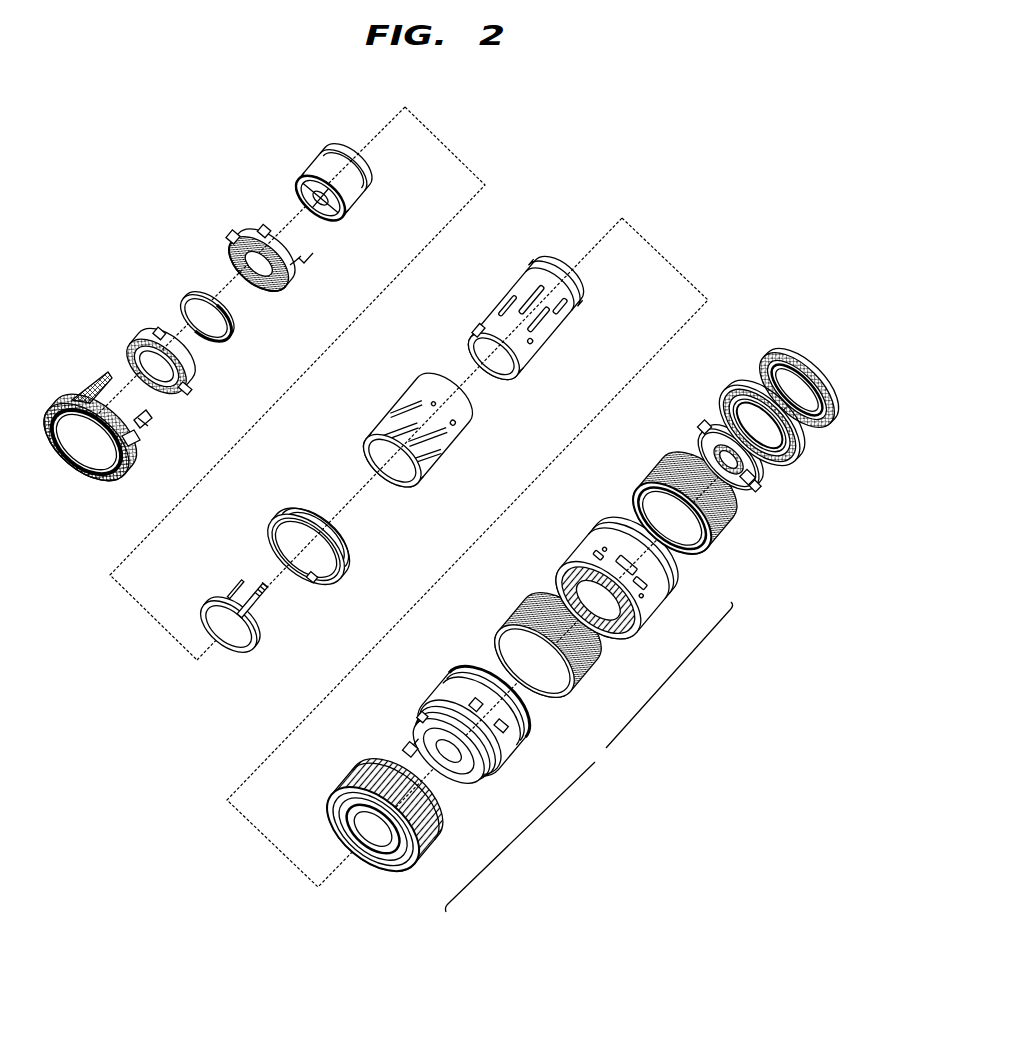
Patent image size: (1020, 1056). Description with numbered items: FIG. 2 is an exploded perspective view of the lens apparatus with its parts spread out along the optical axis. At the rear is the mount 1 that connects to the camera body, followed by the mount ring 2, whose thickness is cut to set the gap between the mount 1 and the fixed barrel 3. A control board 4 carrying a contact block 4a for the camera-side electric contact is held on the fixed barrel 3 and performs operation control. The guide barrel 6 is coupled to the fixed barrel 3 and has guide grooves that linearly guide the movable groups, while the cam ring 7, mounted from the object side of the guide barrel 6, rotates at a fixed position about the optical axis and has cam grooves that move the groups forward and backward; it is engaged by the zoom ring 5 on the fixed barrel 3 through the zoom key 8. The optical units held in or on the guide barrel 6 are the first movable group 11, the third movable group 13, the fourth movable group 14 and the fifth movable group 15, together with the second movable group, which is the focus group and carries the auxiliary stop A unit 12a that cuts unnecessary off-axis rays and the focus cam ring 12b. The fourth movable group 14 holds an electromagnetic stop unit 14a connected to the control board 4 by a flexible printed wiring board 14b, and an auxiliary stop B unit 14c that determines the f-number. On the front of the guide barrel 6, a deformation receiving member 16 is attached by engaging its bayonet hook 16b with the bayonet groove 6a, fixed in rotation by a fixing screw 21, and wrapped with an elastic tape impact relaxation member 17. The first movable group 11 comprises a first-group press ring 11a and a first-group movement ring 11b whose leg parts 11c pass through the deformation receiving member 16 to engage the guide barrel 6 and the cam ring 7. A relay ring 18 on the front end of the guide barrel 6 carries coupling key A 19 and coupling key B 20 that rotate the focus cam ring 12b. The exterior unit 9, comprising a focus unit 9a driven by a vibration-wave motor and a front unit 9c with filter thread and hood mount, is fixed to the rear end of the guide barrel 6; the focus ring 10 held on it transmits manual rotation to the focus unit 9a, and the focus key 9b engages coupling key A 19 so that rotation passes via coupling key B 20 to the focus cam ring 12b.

The mount 1 is at (788, 355).
The mount ring 2 is at (800, 455).
The fixed barrel 3 is at (645, 615).
The control board 4 is at (757, 482).
The contact block 4a is at (708, 432).
The zoom ring 5 is at (730, 535).
The guide barrel 6 is at (520, 282).
The bayonet groove 6a is at (478, 330).
The cam ring 7 is at (400, 400).
The zoom key 8 is at (640, 496).
The exterior unit 9 is at (588, 757).
The focus unit 9a is at (423, 718).
The focus key 9b is at (410, 751).
The front unit 9c is at (345, 780).
The focus ring 10 is at (517, 615).
The first movable group 11 is at (105, 470).
The first-group press ring 11a is at (72, 405).
The first-group movement ring 11b is at (132, 445).
The leg parts 11c is at (150, 420).
The auxiliary stop A unit 12a is at (178, 388).
The focus cam ring 12b is at (160, 338).
The third movable group 13 is at (230, 330).
The fourth movable group 14 is at (265, 289).
The electromagnetic stop unit 14a is at (233, 247).
The flexible printed wiring board 14b is at (313, 255).
The auxiliary stop B unit 14c is at (245, 234).
The fifth movable group 15 is at (328, 158).
The deformation receiving member 16 is at (276, 518).
The bayonet hook 16b is at (310, 577).
The impact relaxation member 17 is at (297, 512).
The relay ring 18 is at (243, 655).
The coupling key A 19 is at (262, 608).
The coupling key B 20 is at (230, 585).
The fixing screw 21 is at (366, 587).